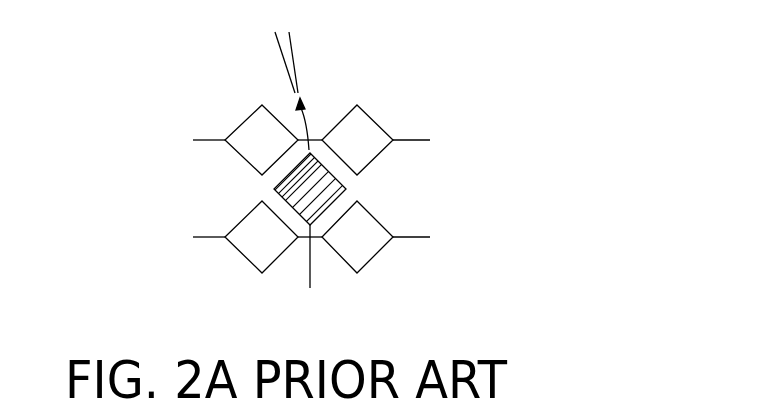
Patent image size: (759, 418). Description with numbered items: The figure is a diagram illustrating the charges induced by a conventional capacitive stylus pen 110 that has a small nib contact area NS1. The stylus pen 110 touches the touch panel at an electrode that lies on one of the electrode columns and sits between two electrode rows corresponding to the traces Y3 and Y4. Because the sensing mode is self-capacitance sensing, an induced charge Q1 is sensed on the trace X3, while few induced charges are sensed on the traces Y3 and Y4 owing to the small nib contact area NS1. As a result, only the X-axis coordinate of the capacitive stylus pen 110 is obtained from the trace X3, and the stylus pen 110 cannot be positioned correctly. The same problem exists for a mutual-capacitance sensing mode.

The capacitive stylus pen 110 is at (293, 43).
The nib contact area NS1 is at (296, 94).
The induced charge Q1 is at (310, 163).
The trace Y3 is at (293, 140).
The trace Y4 is at (293, 237).
The trace X3 is at (304, 274).